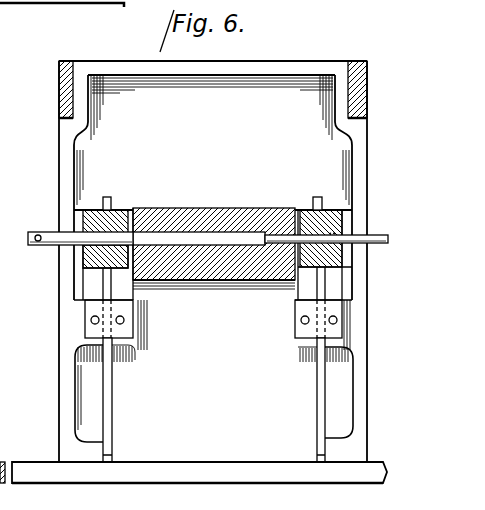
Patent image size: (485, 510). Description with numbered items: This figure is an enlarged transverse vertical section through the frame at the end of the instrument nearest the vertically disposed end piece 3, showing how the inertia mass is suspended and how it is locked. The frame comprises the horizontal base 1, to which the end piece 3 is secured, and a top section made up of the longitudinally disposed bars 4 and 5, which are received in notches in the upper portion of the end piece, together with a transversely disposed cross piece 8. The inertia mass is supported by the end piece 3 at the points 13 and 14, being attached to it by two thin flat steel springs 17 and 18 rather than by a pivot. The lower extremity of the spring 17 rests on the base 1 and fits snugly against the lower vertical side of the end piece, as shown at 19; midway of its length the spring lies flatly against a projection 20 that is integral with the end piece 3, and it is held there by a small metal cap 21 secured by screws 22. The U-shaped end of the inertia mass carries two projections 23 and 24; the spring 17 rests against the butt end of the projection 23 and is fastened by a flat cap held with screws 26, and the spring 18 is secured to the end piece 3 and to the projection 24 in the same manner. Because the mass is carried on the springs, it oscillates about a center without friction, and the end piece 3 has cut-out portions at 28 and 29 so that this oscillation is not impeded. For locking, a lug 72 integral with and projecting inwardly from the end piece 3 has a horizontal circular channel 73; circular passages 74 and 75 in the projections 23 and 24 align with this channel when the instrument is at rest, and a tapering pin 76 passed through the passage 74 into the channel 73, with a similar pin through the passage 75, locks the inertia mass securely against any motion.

The horizontal base 1 is at (27, 462).
The end piece 3 is at (122, 117).
The longitudinal bar 4 is at (352, 61).
The longitudinal bar 5 is at (62, 91).
The cross piece 8 is at (3, 262).
The support point 13 is at (115, 270).
The support point 14 is at (310, 272).
The flat steel spring 17 is at (112, 388).
The flat steel spring 18 is at (317, 381).
The spring lower extremity seat 19 is at (114, 449).
The projection 20 is at (133, 347).
The metal cap 21 is at (127, 328).
The screws 22 is at (116, 322).
The projection 23 is at (90, 210).
The projection 24 is at (305, 209).
The screws 26 is at (73, 232).
The cut-out portion 28 is at (82, 277).
The cut-out portion 29 is at (345, 208).
The lug 72 is at (187, 212).
The circular channel 73 is at (213, 237).
The circular passage 74 is at (88, 255).
The circular passage 75 is at (323, 283).
The tapering pin 76 is at (142, 238).